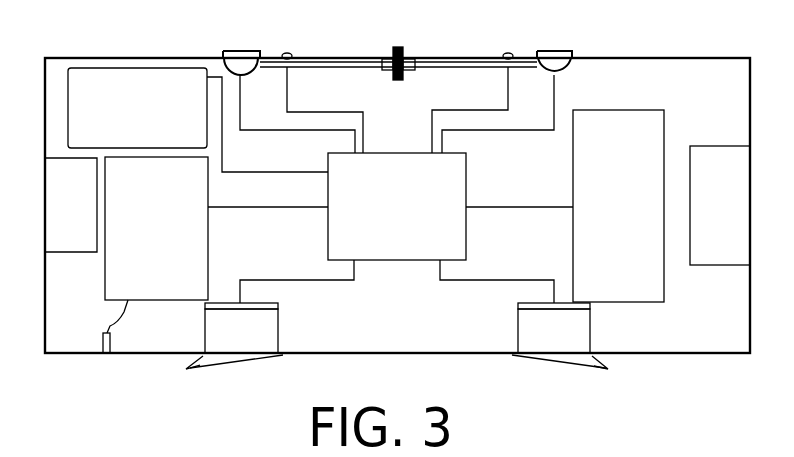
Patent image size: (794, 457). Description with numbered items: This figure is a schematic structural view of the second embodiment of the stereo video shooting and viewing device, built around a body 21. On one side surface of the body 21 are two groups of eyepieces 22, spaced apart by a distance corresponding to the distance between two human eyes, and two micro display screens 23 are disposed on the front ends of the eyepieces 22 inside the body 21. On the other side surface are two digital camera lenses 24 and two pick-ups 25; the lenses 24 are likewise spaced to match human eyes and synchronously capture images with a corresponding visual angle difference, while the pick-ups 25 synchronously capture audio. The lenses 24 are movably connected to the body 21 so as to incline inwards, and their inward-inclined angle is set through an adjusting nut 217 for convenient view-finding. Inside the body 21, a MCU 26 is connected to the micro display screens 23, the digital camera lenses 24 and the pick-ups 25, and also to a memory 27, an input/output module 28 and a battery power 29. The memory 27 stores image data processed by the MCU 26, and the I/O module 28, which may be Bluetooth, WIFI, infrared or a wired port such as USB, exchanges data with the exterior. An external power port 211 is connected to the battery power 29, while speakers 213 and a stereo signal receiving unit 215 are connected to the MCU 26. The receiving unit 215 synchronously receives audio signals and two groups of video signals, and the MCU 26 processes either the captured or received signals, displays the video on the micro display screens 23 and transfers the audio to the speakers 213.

The body 21 is at (636, 58).
The eyepieces 22 is at (242, 340).
The micro display screens 23 is at (278, 303).
The digital camera lenses 24 is at (240, 51).
The pick-ups 25 is at (288, 55).
The MCU 26 is at (406, 250).
The memory 27 is at (620, 122).
The input/output module 28 is at (741, 165).
The battery power 29 is at (175, 292).
The external power port 211 is at (99, 355).
The speakers 213 is at (135, 73).
The stereo signal receiving unit 215 is at (50, 192).
The adjusting nut 217 is at (397, 50).